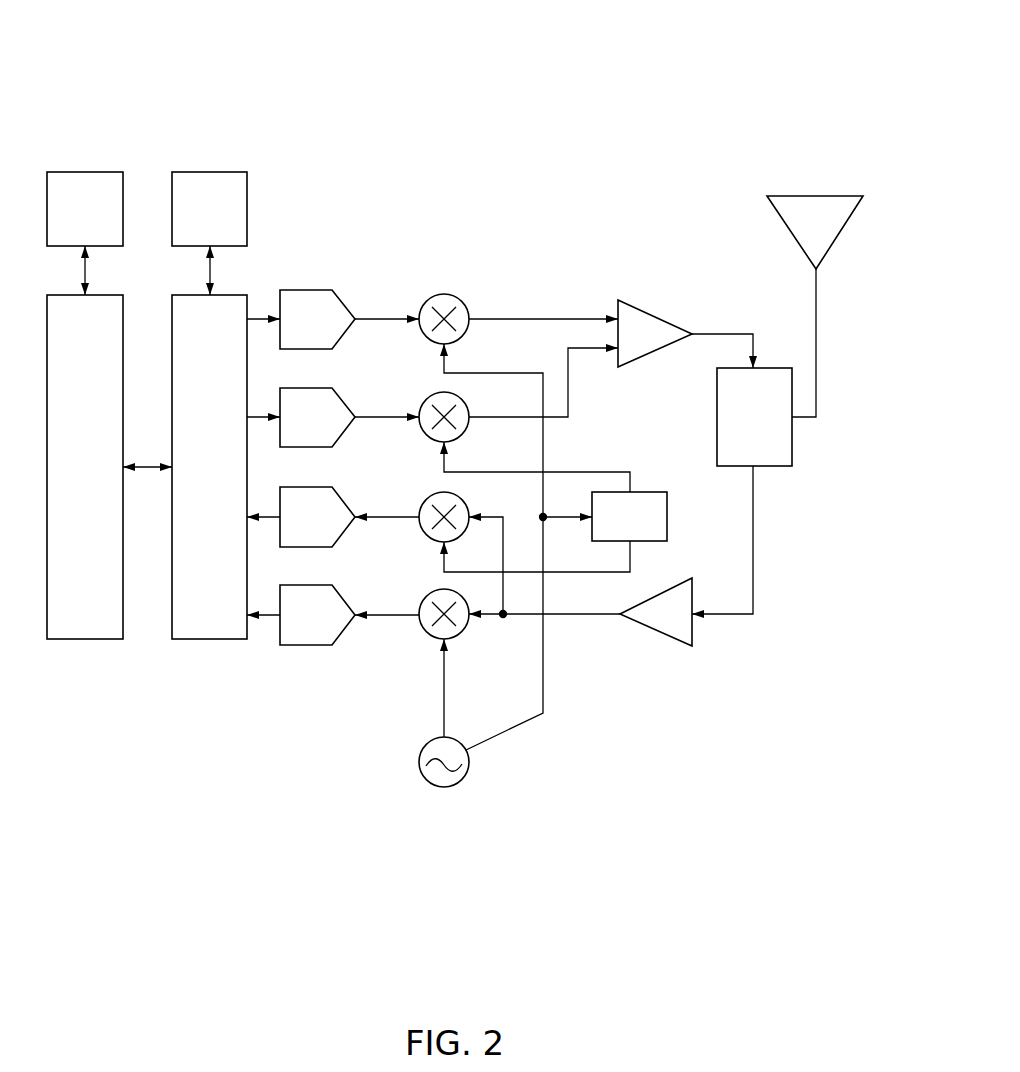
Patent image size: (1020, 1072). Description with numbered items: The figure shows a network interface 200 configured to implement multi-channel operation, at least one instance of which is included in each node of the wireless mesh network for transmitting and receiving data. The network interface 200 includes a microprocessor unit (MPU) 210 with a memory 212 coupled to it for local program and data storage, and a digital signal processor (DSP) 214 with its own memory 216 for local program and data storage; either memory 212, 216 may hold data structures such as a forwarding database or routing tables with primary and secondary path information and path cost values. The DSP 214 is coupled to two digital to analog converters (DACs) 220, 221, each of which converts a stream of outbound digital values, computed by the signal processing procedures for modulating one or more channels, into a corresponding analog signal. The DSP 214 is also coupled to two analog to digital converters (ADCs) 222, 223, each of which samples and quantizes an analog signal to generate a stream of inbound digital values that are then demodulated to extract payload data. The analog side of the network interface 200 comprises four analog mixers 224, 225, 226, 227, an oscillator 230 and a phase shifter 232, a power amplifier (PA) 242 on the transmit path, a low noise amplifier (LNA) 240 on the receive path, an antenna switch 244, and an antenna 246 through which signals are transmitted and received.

The network interface 200 is at (603, 125).
The microprocessor unit 210 is at (67, 490).
The memory 212 is at (67, 232).
The digital signal processor 214 is at (192, 490).
The memory 216 is at (192, 232).
The digital to analog converter 220 is at (288, 344).
The digital to analog converter 221 is at (288, 442).
The analog to digital converter 222 is at (288, 542).
The analog to digital converter 223 is at (288, 640).
The analog mixer 224 is at (433, 296).
The analog mixer 225 is at (433, 395).
The analog mixer 226 is at (433, 495).
The analog mixer 227 is at (436, 593).
The oscillator 230 is at (424, 745).
The phase shifter 232 is at (612, 530).
The low noise amplifier 240 is at (653, 627).
The power amplifier 242 is at (638, 300).
The antenna switch 244 is at (736, 430).
The antenna 246 is at (786, 222).